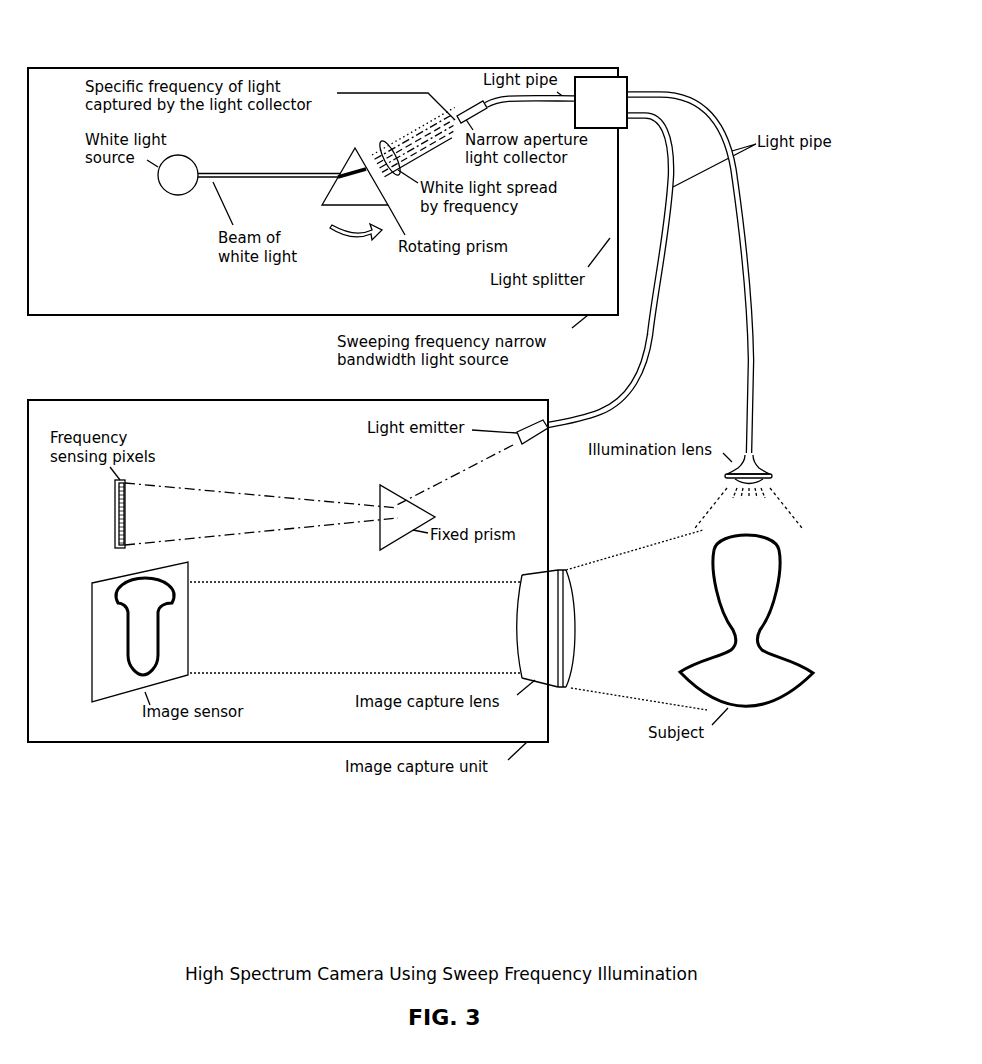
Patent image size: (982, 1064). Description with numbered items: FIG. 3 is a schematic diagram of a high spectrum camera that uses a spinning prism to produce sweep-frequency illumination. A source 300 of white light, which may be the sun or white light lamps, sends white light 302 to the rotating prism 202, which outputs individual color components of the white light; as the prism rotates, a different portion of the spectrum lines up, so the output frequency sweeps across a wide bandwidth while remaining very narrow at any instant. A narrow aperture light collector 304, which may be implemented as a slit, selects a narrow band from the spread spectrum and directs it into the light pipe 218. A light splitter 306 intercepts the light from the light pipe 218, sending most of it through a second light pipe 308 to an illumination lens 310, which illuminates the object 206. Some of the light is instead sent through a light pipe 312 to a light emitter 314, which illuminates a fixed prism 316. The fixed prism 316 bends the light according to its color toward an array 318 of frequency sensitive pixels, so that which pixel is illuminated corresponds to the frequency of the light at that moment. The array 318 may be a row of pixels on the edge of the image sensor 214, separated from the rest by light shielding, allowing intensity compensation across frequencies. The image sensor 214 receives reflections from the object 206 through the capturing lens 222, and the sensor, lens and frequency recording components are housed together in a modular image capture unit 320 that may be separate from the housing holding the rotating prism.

The prism 202 is at (345, 175).
The object 206 is at (715, 593).
The image sensor 214 is at (157, 657).
The light pipe 218 is at (487, 102).
The capturing lens 222 is at (575, 620).
The source of white light 300 is at (160, 185).
The white light 302 is at (253, 177).
The narrow aperture light collector 304 is at (457, 118).
The light splitter 306 is at (628, 83).
The second light pipe 308 is at (742, 267).
The illumination lens 310 is at (760, 462).
The light pipe 312 is at (653, 335).
The light emitter 314 is at (525, 445).
The fixed prism 316 is at (380, 488).
The array of frequency sensitive pixels 318 is at (128, 515).
The image capture unit 320 is at (548, 532).